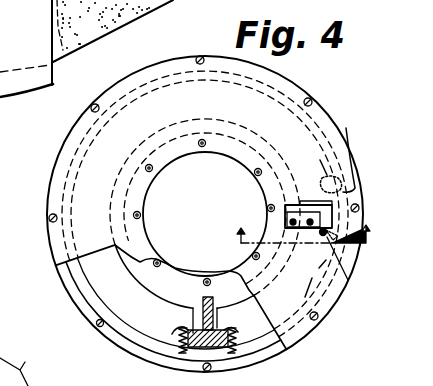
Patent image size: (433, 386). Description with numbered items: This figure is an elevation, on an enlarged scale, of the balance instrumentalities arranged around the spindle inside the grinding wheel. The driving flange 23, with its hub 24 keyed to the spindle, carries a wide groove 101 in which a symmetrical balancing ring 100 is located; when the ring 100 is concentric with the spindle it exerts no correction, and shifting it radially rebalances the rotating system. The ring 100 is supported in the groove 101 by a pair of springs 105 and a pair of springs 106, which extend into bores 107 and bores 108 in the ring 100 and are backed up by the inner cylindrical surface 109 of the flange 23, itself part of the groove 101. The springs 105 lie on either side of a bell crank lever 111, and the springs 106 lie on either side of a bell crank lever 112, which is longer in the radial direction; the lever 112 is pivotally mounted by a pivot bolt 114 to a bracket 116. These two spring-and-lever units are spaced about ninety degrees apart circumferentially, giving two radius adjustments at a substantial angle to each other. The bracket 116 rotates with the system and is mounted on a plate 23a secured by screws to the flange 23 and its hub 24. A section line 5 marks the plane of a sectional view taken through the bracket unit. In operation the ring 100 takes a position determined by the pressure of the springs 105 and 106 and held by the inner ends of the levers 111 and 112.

The section line 5- 5 is at (299, 245).
The driving flange 23 is at (68, 282).
The plate 23a is at (60, 176).
The hub 24 is at (150, 187).
The balancing ring 100 is at (146, 318).
The wide groove 101 is at (163, 286).
The springs 105 is at (236, 350).
The springs 106 is at (183, 358).
The bores 107 is at (184, 330).
The bores 108 is at (316, 185).
The inner cylindrical surface 109 is at (295, 292).
The bell crank lever 111 is at (212, 303).
The bell crank lever 112 is at (286, 208).
The pivot bolt 114 is at (359, 152).
The bracket 116 is at (288, 226).